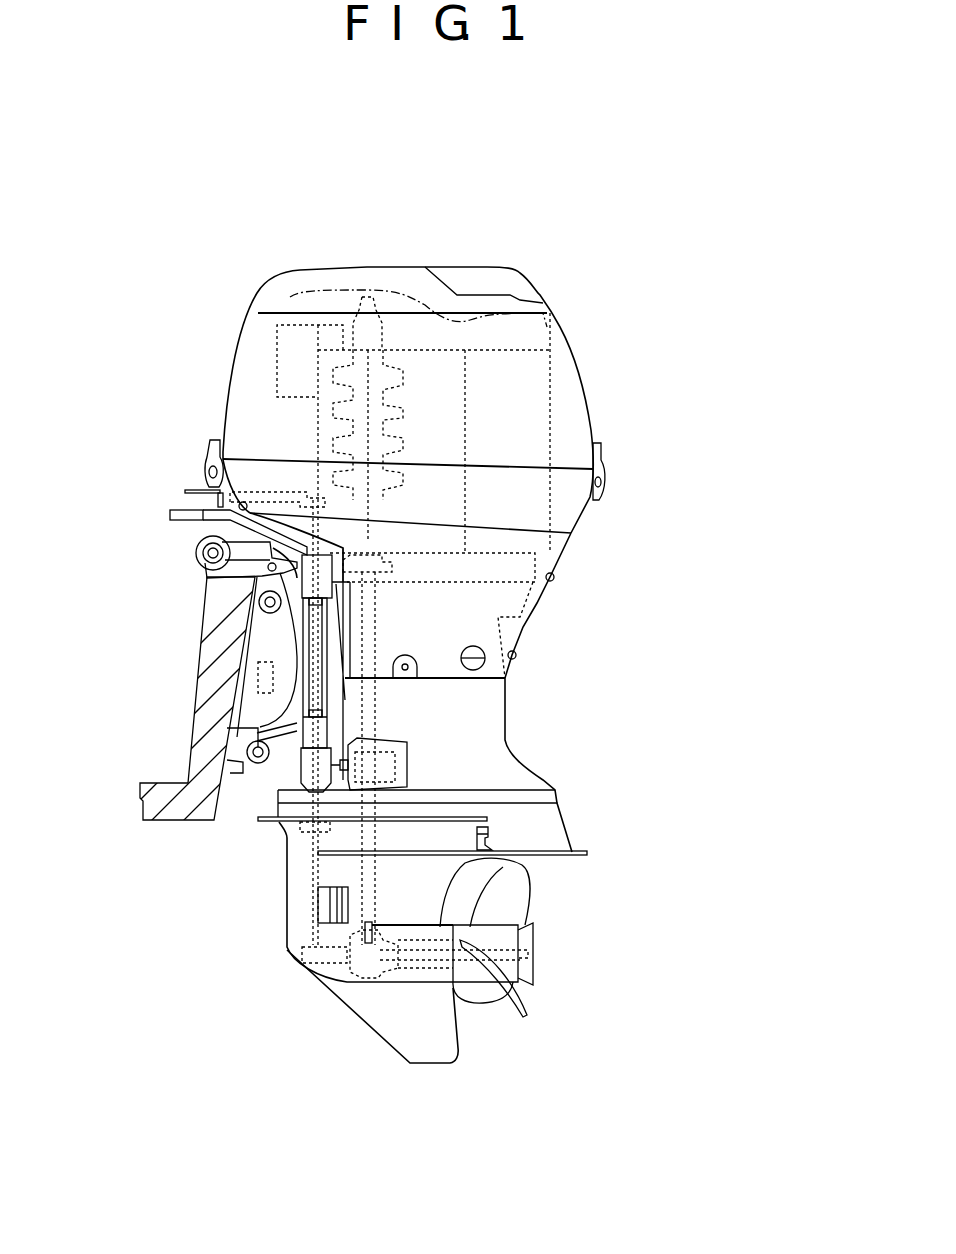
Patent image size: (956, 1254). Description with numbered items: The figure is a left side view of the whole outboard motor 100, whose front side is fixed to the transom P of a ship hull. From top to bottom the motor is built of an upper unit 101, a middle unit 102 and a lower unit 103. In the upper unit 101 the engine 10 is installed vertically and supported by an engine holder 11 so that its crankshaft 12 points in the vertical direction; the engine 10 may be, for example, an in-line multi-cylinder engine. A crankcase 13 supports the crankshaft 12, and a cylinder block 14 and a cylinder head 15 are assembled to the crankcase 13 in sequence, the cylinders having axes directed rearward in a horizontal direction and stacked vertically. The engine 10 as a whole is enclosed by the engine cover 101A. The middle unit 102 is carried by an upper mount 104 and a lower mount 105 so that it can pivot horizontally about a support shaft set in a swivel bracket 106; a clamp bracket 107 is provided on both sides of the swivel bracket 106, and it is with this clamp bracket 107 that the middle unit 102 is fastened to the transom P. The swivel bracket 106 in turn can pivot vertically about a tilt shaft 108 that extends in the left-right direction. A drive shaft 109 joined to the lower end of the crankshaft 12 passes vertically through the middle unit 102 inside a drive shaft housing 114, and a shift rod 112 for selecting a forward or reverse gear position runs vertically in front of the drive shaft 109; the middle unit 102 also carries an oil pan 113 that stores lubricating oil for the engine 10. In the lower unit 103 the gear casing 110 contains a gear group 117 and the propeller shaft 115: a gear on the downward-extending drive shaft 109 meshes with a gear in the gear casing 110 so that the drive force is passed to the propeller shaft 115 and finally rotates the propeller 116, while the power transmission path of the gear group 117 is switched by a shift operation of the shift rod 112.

The outboard motor 100 is at (553, 292).
The upper unit 101 is at (743, 265).
The engine cover 101A is at (587, 411).
The middle unit 102 is at (743, 557).
The lower unit 103 is at (743, 792).
The engine 10 is at (553, 402).
The engine holder 11 is at (535, 565).
The crankshaft 12 is at (357, 425).
The crankcase 13 is at (325, 363).
The cylinder block 14 is at (422, 350).
The cylinder head 15 is at (545, 450).
The upper mount 104 is at (380, 583).
The lower mount 105 is at (383, 753).
The swivel bracket 106 is at (300, 595).
The clamp bracket 107 is at (260, 640).
The tilt shaft 108 is at (210, 553).
The drive shaft 109 is at (345, 678).
The gear casing 110 is at (295, 945).
The shift rod 112 is at (317, 917).
The oil pan 113 is at (537, 602).
The drive shaft housing 114 is at (507, 720).
The propeller shaft 115 is at (443, 955).
The propeller 116 is at (523, 900).
The gear group 117 is at (355, 967).
The transom P is at (198, 692).